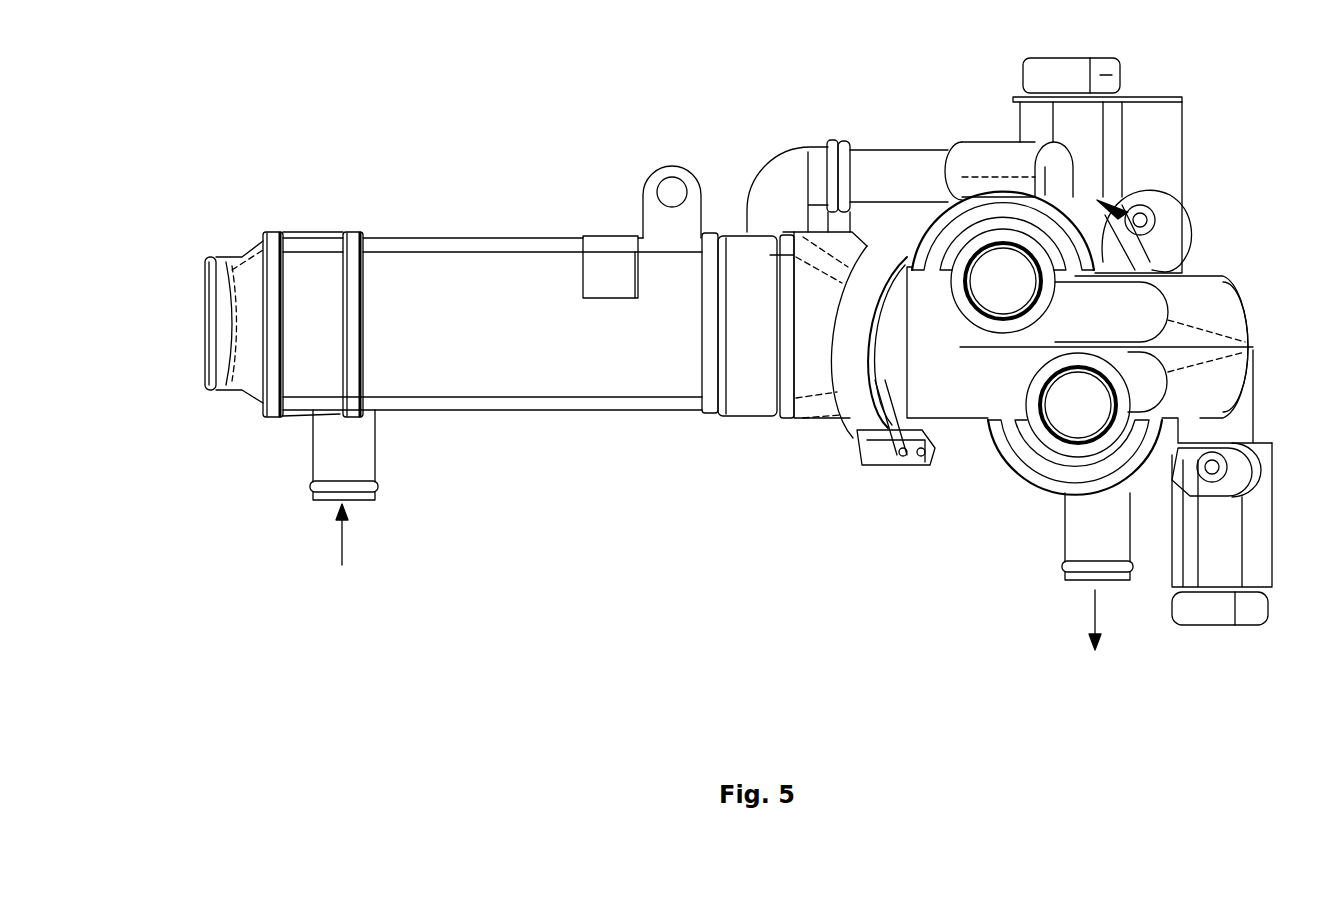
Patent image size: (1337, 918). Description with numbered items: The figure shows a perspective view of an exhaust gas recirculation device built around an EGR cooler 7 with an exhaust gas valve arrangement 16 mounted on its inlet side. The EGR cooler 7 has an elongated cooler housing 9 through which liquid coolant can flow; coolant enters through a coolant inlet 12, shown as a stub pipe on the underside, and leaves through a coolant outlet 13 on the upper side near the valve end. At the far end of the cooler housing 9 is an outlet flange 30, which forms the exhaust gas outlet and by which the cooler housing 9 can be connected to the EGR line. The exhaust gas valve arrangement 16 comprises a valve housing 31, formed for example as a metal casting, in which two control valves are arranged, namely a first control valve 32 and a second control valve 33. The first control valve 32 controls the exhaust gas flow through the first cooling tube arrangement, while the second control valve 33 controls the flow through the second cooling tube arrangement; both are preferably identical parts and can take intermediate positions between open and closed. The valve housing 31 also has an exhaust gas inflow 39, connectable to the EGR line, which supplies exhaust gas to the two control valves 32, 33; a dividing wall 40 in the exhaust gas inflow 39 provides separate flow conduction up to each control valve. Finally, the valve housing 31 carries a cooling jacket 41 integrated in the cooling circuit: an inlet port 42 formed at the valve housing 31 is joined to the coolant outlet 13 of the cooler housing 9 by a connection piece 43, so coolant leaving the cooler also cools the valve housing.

The exhaust gas recirculation cooler 7 is at (478, 212).
The cooler housing 9 is at (490, 375).
The coolant inlet 12 is at (322, 460).
The coolant outlet 13 is at (777, 188).
The exhaust gas valve arrangement 16 is at (963, 419).
The outlet flange 30 is at (215, 322).
The valve housing 31 is at (922, 397).
The first control valve 32 is at (1078, 418).
The second control valve 33 is at (1010, 287).
The exhaust gas inflow 39 is at (1106, 325).
The dividing wall 40 is at (1200, 347).
The cooling jacket 41 is at (978, 210).
The inlet port 42 is at (993, 163).
The connection piece 43 is at (893, 167).